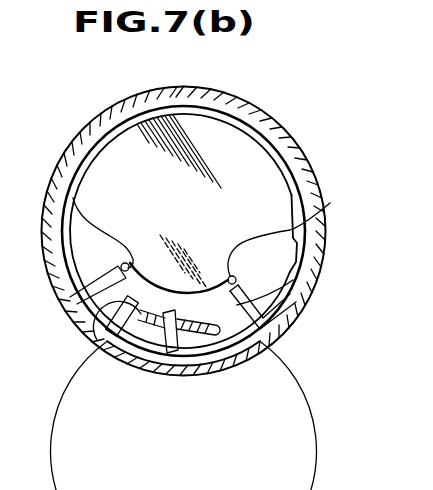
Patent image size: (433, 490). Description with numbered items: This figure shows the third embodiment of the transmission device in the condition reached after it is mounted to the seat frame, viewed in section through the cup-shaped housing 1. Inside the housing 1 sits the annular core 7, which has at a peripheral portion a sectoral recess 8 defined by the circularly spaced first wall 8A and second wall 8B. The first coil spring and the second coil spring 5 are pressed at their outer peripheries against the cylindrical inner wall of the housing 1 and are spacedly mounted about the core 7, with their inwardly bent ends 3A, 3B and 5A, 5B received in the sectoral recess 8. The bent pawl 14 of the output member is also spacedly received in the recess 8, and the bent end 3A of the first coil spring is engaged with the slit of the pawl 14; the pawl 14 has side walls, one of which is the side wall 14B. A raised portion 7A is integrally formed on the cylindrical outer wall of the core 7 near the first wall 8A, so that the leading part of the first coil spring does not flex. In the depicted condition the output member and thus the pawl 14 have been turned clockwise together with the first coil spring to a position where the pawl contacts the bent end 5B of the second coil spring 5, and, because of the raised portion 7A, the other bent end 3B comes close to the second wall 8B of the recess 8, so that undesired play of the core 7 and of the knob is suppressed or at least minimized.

The cup-shaped housing 1 is at (222, 97).
The second coil spring 5 is at (293, 162).
The annular core 7 is at (233, 166).
The raised portion 7A is at (288, 266).
The sectoral recess 8 is at (208, 293).
The first wall 8A is at (296, 229).
The second wall 8B is at (56, 204).
The bent end of second coil spring 5A is at (298, 309).
The bent end of second coil spring 5B is at (108, 338).
The bent end of first coil spring 3A is at (176, 366).
The bent end of first coil spring 3B is at (96, 300).
The bent pawl 14 is at (128, 350).
The side wall of pawl 14B is at (206, 336).